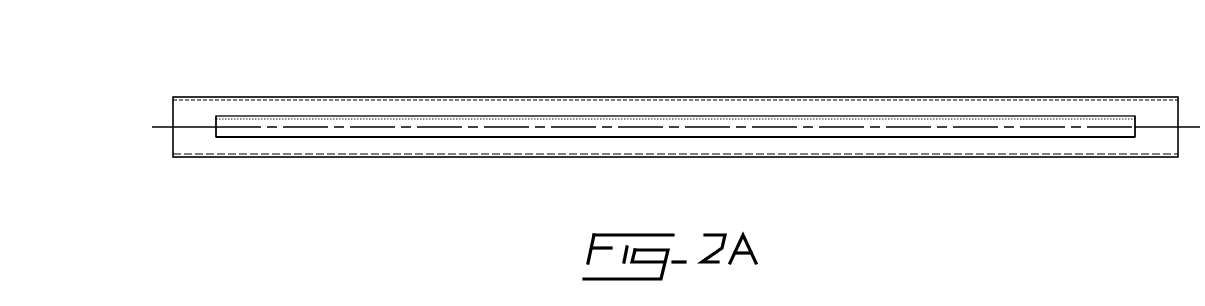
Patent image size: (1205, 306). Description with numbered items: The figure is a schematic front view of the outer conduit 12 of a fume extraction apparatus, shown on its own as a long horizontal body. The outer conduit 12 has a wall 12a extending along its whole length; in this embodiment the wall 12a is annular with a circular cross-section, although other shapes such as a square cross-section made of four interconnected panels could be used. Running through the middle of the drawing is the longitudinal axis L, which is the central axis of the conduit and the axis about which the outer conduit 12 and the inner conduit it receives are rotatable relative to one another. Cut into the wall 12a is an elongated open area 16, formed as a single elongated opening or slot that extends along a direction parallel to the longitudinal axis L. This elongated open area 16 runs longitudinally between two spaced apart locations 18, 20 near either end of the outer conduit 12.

The outer conduit 12 is at (207, 109).
The wall 12a is at (675, 127).
The elongated open area 16 is at (418, 127).
The spaced apart location 18 is at (220, 139).
The spaced apart location 20 is at (1133, 139).
The longitudinal axis L is at (1163, 127).